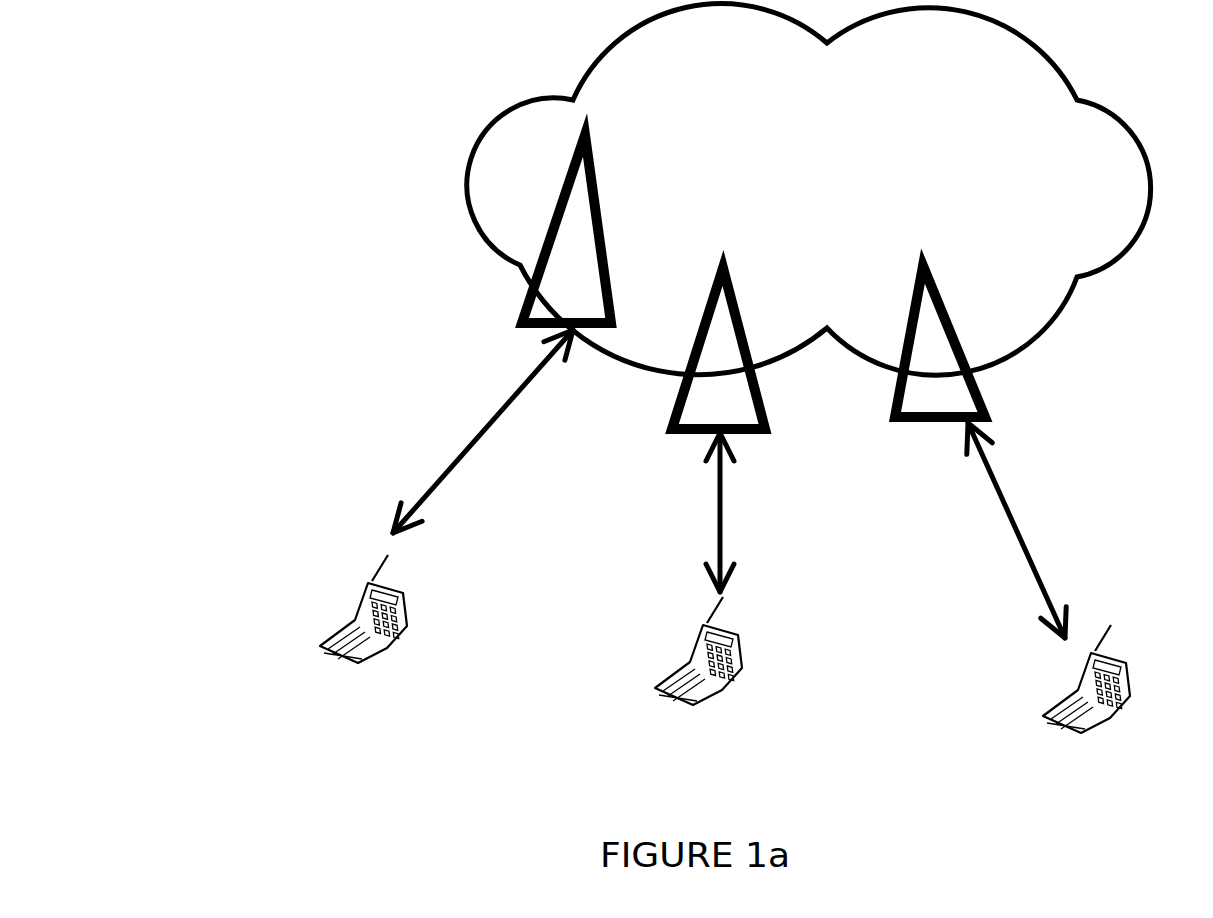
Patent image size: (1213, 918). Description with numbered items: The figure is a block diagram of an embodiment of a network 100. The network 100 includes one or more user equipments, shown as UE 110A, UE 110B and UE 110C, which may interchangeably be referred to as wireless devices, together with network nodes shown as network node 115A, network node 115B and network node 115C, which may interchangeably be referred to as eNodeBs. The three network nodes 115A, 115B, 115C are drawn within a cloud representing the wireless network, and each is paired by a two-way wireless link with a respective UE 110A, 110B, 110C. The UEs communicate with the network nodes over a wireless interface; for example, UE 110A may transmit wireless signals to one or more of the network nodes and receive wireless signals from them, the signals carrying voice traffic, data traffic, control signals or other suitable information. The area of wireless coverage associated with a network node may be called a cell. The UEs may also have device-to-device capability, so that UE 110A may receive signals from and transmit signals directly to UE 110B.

The network 100 is at (160, 63).
The UE 110A is at (435, 532).
The UE 110B is at (705, 598).
The UE 110C is at (1053, 607).
The network node 115A is at (514, 229).
The network node 115B is at (678, 348).
The network node 115C is at (931, 364).